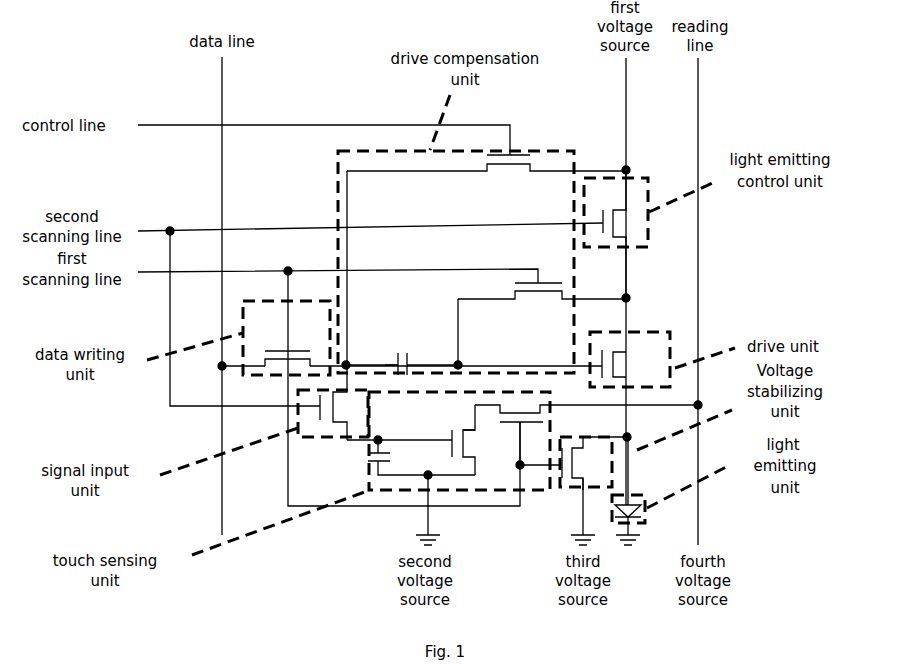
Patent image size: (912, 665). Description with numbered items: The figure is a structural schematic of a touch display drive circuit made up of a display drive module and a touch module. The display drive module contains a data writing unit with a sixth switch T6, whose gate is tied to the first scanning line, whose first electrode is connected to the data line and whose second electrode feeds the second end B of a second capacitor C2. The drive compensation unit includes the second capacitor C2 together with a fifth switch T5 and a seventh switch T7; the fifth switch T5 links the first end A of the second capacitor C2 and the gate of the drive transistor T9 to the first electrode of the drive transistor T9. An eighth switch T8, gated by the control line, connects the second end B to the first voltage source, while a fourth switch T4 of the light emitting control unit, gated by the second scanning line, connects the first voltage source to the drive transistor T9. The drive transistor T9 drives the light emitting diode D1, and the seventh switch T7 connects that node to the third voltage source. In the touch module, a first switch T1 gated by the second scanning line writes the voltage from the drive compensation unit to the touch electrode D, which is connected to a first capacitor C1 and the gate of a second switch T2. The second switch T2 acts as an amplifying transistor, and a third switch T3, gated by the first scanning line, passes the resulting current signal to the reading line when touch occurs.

The first switch T1 is at (338, 402).
The second switch T2 is at (470, 452).
The third switch T3 is at (517, 429).
The fourth switch T4 is at (611, 234).
The fifth switch T5 is at (542, 278).
The sixth switch T6 is at (291, 347).
The seventh switch T7 is at (580, 463).
The eighth switch T8 is at (486, 160).
The drive transistor T9 is at (627, 364).
The first capacitor C1 is at (392, 461).
The second capacitor C2 is at (402, 352).
The light emitting diode D1 is at (640, 480).
The first end of the second capacitor A is at (438, 360).
The second end of the second capacitor B is at (386, 361).
The touch electrode D is at (382, 431).